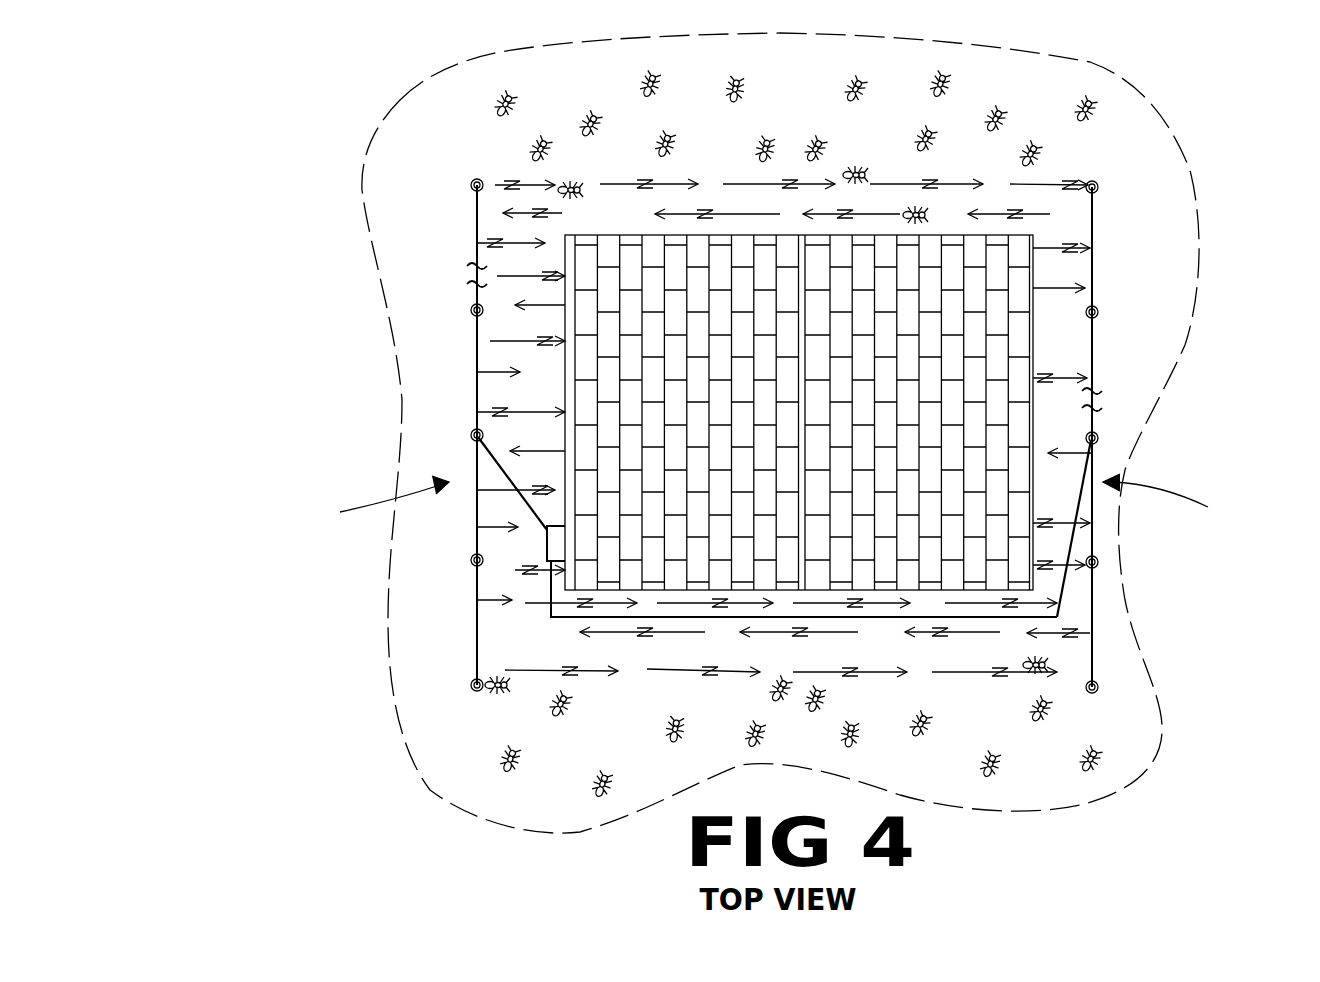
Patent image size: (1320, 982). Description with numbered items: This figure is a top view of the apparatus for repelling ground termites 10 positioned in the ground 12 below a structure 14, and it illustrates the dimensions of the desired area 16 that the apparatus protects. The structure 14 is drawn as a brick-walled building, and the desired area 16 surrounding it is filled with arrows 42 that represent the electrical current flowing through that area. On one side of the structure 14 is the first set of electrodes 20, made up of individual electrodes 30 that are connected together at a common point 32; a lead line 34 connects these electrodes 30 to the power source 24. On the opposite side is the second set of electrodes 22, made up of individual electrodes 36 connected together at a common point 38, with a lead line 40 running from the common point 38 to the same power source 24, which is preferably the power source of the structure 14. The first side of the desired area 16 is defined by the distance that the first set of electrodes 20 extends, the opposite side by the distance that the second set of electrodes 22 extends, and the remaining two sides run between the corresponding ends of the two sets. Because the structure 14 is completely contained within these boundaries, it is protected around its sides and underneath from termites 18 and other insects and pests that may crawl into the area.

The apparatus for repelling ground termites 10 is at (320, 190).
The ground 12 is at (1152, 208).
The structure 14 is at (1000, 268).
The desired area 16 is at (514, 410).
The termites 18 is at (600, 790).
The first set of electrodes 20 is at (371, 496).
The second set of electrodes 22 is at (1185, 498).
The power source 24 is at (547, 548).
The electrode 30 is at (474, 684).
The common point 32 is at (474, 436).
The lead line 34 is at (547, 532).
The electrode 36 is at (1096, 686).
The common point 38 is at (1096, 438).
The lead line 40 is at (1058, 588).
The arrows 42 is at (653, 670).